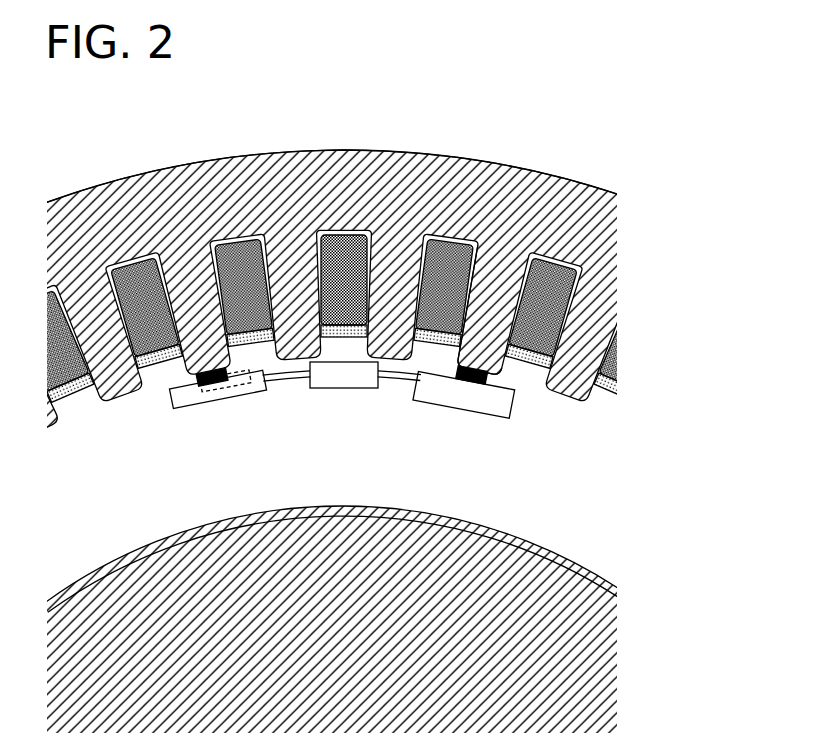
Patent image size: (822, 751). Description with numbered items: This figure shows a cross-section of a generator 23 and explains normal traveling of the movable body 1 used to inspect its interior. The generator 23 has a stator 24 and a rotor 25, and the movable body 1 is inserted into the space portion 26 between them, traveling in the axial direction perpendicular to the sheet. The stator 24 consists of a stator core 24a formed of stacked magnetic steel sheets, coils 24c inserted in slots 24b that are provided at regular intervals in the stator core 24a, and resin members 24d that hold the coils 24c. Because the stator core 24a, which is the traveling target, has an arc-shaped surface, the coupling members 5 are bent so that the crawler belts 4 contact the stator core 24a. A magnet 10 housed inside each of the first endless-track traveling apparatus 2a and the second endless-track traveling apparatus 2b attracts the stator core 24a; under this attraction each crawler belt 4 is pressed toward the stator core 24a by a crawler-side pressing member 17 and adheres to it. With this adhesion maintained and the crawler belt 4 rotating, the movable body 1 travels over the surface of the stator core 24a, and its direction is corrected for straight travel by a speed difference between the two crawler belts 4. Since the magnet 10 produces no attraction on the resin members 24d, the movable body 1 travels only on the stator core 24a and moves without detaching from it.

The movable body 1 is at (344, 423).
The first endless-track traveling apparatus 2a is at (187, 405).
The second endless-track traveling apparatus 2b is at (447, 393).
The crawler belt 4 is at (187, 381).
The coupling member 5 is at (344, 411).
The magnet 10 is at (242, 398).
The crawler-side pressing member 17 is at (215, 390).
The generator 23 is at (411, 423).
The stator 24 is at (389, 278).
The stator core 24a is at (527, 203).
The slot 24b is at (437, 243).
The coil 24c is at (507, 225).
The resin member 24d is at (348, 248).
The rotor 25 is at (605, 622).
The space portion 26 is at (543, 458).